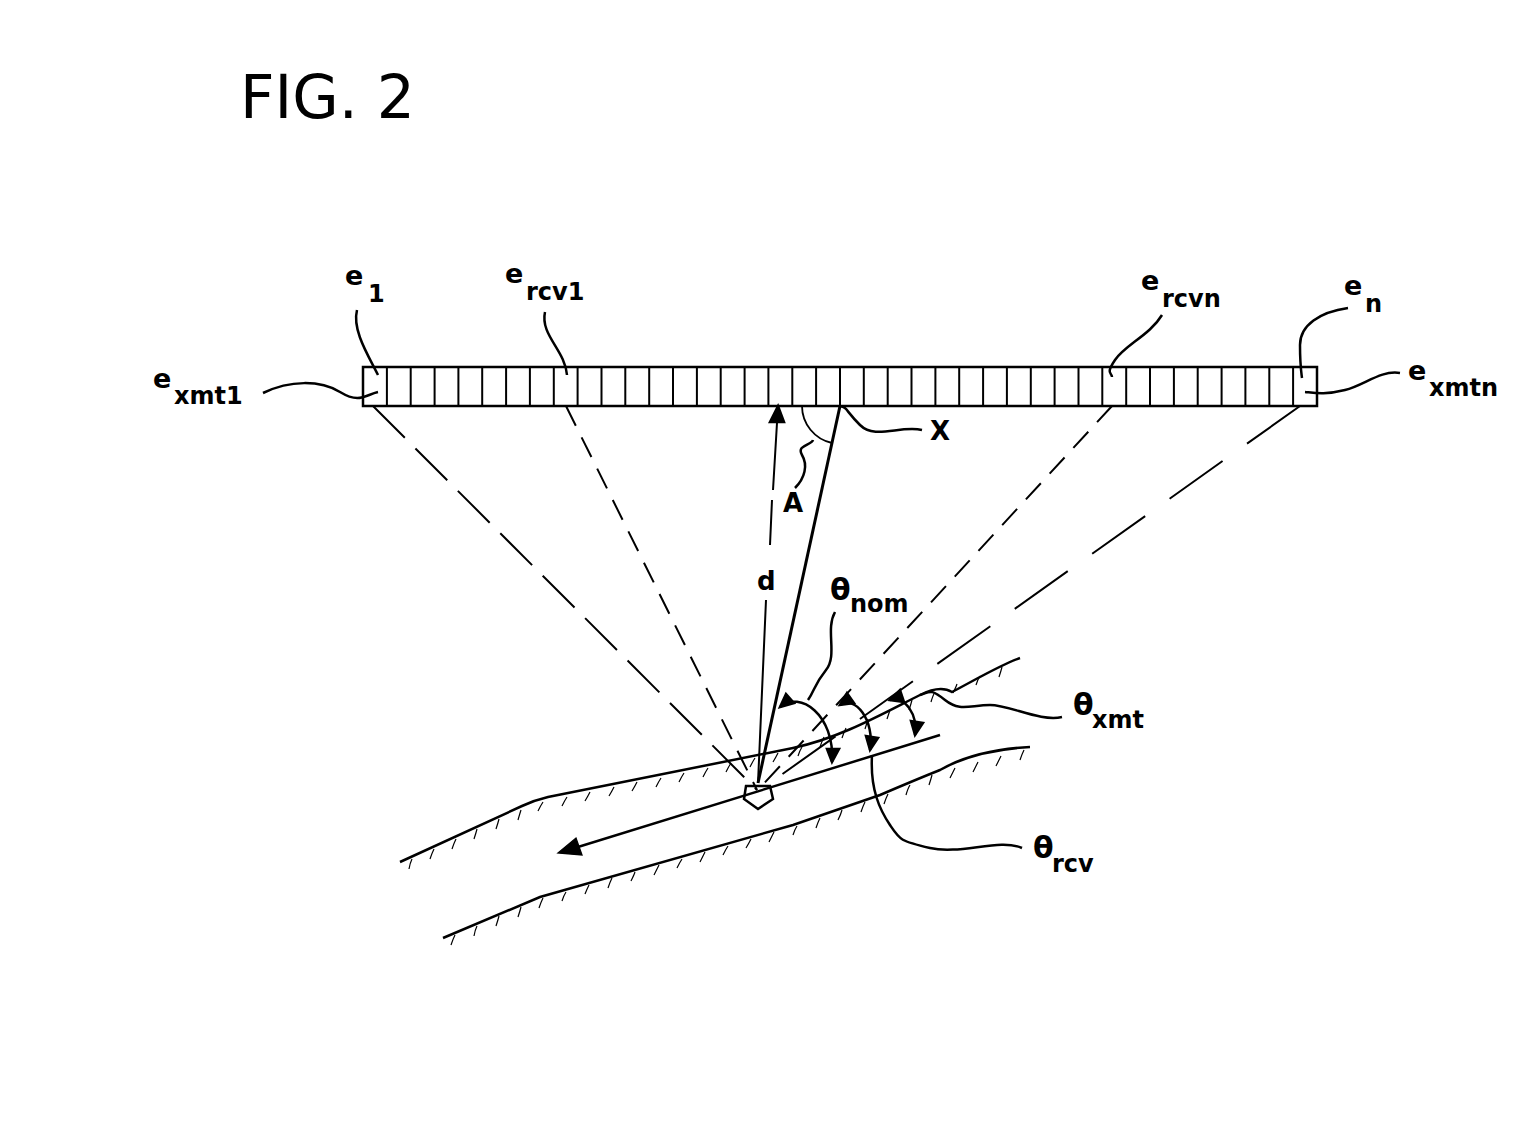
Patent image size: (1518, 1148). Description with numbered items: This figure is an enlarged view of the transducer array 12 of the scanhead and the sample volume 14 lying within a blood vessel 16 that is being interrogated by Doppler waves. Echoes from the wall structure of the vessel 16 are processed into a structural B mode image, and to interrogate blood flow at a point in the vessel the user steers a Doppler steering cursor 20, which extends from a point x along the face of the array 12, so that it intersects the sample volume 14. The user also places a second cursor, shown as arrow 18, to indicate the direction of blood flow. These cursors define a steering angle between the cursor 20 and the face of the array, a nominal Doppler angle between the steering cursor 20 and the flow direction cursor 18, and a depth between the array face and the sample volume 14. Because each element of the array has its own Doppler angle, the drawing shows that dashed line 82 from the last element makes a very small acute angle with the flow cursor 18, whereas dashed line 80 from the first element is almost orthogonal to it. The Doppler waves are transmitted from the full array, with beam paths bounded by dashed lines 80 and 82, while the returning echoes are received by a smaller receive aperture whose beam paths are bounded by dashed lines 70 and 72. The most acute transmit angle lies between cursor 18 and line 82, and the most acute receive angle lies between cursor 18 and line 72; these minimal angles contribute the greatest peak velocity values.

The transducer array 12 is at (938, 365).
The sample volume 14 is at (770, 808).
The blood vessel 16 is at (637, 782).
The flow direction cursor 18 is at (630, 832).
The Doppler steering cursor 20 is at (815, 515).
The dashed line bounding receive beam paths 70 is at (628, 530).
The dashed line bounding receive beam paths 72 is at (998, 530).
The dashed line bounding transmit beam paths 80 is at (570, 605).
The dashed line bounding transmit beam paths 82 is at (1116, 537).